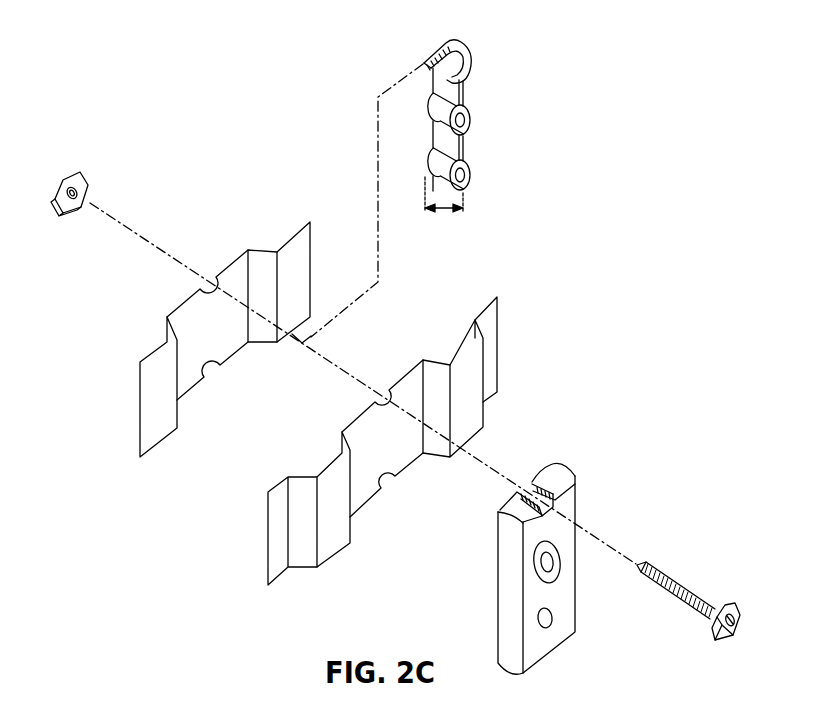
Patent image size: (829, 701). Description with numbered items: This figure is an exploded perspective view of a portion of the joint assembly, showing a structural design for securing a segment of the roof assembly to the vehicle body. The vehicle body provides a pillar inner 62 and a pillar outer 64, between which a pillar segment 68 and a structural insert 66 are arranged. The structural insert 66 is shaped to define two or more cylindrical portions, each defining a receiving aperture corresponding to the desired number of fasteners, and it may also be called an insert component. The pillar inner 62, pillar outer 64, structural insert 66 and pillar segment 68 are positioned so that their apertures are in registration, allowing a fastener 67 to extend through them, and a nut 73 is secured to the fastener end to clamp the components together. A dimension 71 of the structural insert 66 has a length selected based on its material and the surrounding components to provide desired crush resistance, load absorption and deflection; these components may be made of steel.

The pillar inner 62 is at (495, 300).
The pillar outer 64 is at (236, 250).
The structural insert 66 is at (462, 54).
The screw 67 is at (678, 582).
The pillar segment 68 is at (497, 618).
The dimension 71 is at (447, 210).
The nut 73 is at (77, 172).